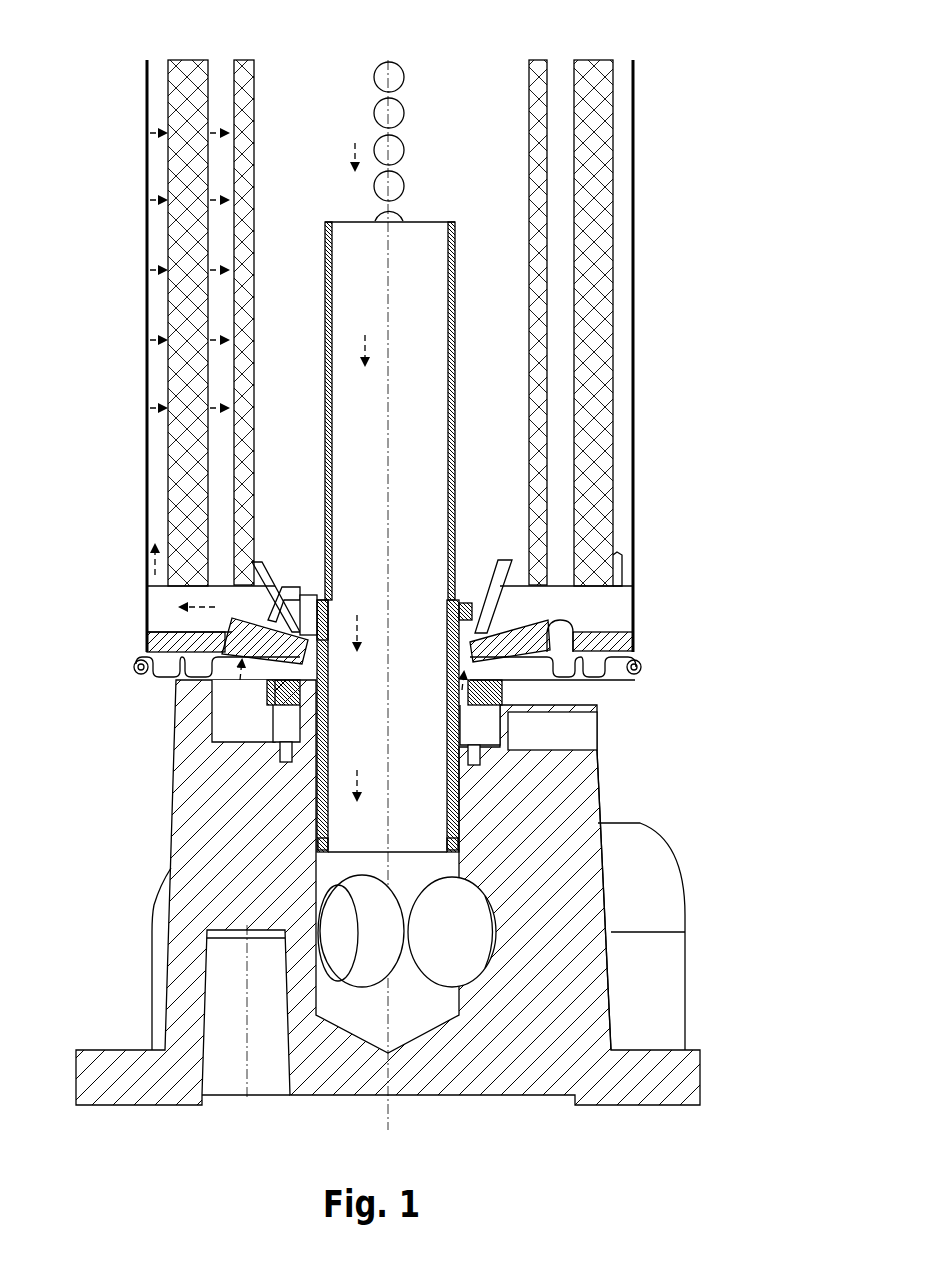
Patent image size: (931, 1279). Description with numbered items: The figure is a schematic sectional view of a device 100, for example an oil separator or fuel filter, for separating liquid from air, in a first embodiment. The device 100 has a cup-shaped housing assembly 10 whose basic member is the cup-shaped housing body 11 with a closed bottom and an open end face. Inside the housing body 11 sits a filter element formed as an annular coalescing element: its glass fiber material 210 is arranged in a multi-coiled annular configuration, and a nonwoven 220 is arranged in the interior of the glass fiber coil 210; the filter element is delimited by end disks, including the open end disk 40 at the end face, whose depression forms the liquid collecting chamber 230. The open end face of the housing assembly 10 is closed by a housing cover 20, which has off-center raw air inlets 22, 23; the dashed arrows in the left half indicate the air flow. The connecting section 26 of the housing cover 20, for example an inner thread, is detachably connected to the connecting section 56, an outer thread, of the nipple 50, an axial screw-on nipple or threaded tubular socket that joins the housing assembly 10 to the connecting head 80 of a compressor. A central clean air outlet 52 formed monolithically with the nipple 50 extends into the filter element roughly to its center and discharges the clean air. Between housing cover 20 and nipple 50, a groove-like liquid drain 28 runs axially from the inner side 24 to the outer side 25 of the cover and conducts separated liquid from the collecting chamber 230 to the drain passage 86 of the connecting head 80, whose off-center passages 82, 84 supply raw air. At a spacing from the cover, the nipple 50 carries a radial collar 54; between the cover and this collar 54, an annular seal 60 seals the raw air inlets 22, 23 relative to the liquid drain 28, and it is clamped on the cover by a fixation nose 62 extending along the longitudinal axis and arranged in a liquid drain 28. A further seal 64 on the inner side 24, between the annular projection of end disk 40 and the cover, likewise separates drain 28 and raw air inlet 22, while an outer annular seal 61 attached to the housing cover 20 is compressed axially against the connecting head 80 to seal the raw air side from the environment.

The device 100 is at (714, 154).
The first filter medium 210 is at (183, 85).
The further filter medium 220 is at (329, 151).
The liquid collecting chamber 230 is at (272, 605).
The cup-shaped housing assembly 10 is at (646, 360).
The cup-shaped housing body 11 is at (634, 500).
The housing cover 20 is at (633, 655).
The raw air inlet 22 is at (192, 632).
The raw air inlet 23 is at (552, 625).
The inner side of the housing cover 24 is at (615, 640).
The outer side of the housing cover 25 is at (641, 668).
The connecting section of the housing cover 26 is at (308, 598).
The liquid drain 28 is at (322, 618).
The end disk 40 is at (618, 560).
The nipple 50 is at (313, 328).
The clean air outlet 52 is at (455, 360).
The collar 54 is at (290, 705).
The connecting section of the nipple 56 is at (446, 660).
The seal 60 is at (250, 690).
The outer seal 61 is at (582, 678).
The fixation nose 62 is at (458, 638).
The seal 64 is at (290, 630).
The connecting head 80 is at (535, 1004).
The first raw air inlet 82 is at (260, 724).
The further raw air inlet 84 is at (540, 690).
The drain passage 86 is at (540, 744).